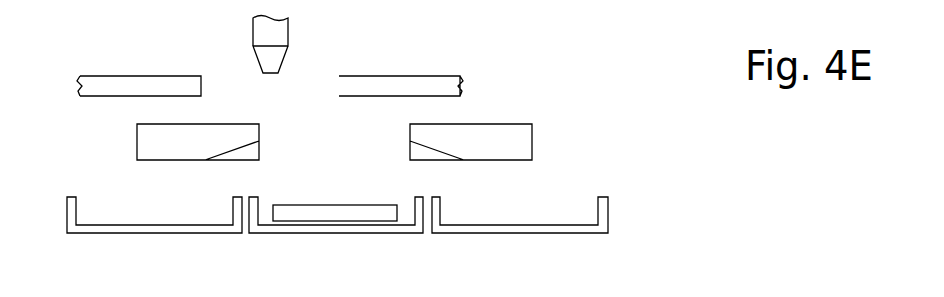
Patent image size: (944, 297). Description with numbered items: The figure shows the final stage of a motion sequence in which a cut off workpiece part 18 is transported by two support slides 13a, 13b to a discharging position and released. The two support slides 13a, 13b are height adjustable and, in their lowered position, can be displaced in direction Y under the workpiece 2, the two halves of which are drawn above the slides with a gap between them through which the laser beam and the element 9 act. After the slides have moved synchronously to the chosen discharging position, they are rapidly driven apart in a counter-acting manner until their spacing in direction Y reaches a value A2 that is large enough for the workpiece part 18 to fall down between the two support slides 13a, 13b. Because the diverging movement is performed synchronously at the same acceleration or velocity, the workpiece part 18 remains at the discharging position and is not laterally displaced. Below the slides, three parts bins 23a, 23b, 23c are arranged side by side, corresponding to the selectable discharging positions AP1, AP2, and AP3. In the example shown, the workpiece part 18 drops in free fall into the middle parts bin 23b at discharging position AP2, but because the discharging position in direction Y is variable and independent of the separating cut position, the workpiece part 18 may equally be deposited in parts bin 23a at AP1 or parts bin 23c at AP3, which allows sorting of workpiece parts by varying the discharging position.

The workpiece 2 is at (118, 85).
The deposition nozzle 9 is at (277, 32).
The support slide 13a is at (513, 145).
The support slide 13b is at (167, 143).
The workpiece part 18 is at (343, 215).
The parts bin 23a is at (125, 227).
The parts bin 23b is at (322, 227).
The parts bin 23c is at (542, 227).
The spacing A2 is at (259, 157).
The discharging position AP1 is at (163, 268).
The discharging position AP2 is at (343, 268).
The discharging position AP3 is at (513, 268).